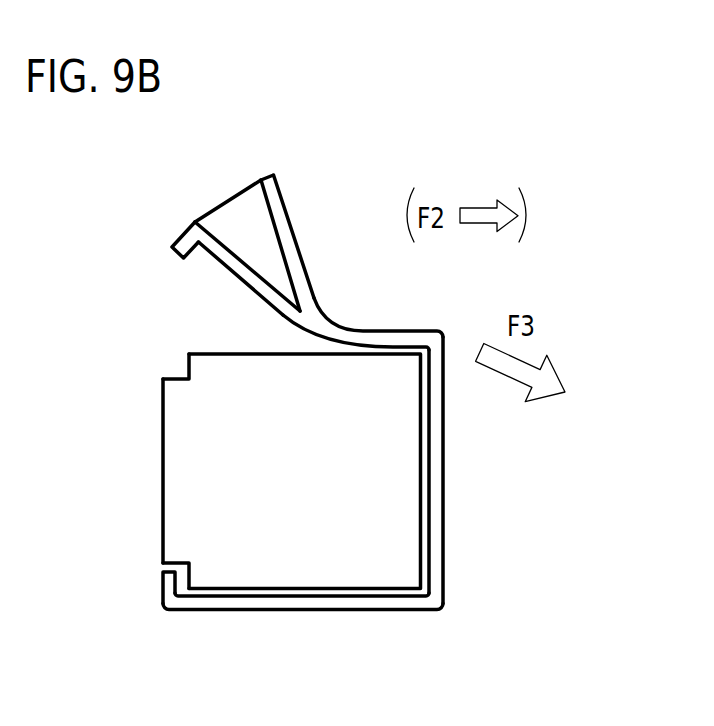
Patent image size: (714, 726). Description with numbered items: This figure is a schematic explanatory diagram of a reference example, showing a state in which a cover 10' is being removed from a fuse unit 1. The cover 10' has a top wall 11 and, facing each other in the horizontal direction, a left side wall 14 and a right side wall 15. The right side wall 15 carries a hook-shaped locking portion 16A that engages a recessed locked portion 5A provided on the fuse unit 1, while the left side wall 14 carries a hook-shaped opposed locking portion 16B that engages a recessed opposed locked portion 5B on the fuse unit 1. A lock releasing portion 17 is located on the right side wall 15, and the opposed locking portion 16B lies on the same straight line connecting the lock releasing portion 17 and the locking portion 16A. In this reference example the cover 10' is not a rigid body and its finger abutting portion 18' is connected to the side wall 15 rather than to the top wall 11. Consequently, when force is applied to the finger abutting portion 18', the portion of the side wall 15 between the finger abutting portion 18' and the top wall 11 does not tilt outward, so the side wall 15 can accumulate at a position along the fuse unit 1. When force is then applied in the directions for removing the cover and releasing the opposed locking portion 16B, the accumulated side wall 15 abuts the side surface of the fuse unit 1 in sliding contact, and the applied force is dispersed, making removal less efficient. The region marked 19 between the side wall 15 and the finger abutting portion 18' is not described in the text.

The fuse unit 1 is at (378, 592).
The locked portion 5A is at (188, 361).
The opposed locked portion 5B is at (185, 566).
The cover 10' is at (309, 400).
The top wall 11 is at (445, 447).
The left side wall 14 is at (282, 613).
The right side wall 15 is at (388, 331).
The locking portion 16A is at (177, 243).
The opposed locking portion 16B is at (162, 595).
The lock releasing portion 17 is at (240, 187).
The finger abutting portion 18' is at (311, 243).
The triangular opening 19 is at (233, 221).